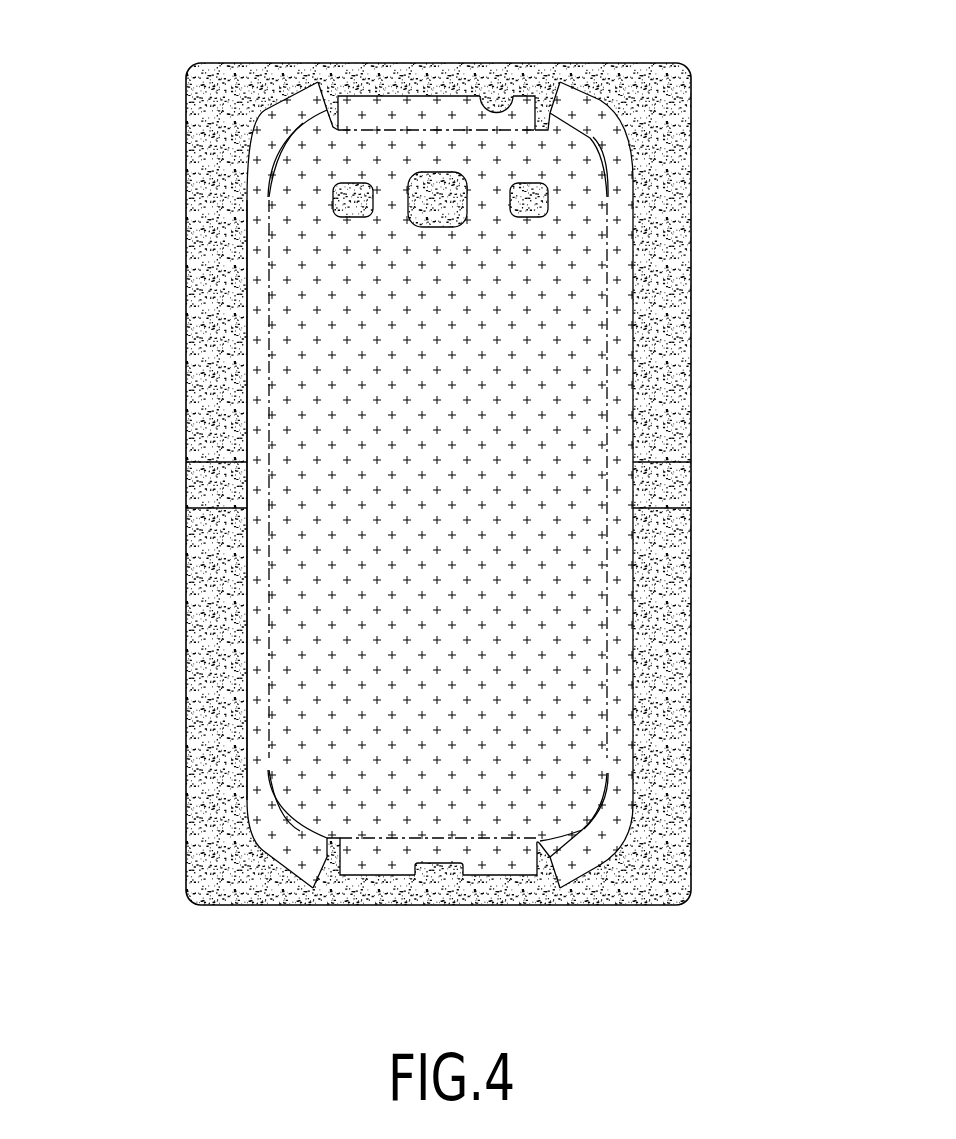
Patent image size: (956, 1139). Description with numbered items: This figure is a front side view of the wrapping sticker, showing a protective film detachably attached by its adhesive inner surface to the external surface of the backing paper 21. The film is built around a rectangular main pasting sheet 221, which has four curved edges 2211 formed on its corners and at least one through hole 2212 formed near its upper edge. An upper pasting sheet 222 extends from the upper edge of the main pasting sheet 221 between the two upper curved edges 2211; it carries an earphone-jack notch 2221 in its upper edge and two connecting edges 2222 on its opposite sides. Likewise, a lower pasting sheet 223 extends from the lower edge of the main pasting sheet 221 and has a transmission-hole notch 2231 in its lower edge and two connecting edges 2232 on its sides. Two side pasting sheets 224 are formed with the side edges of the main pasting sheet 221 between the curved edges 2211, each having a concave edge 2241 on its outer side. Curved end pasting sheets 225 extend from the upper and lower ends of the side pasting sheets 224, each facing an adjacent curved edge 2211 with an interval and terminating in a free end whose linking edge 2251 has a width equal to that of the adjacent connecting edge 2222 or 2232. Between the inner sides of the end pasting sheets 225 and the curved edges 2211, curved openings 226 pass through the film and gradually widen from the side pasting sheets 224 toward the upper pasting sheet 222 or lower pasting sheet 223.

The backing paper 21 is at (672, 655).
The main pasting sheet 221 is at (583, 328).
The curved edges 2211 is at (592, 138).
The through hole 2212 is at (430, 212).
The upper pasting sheet 222 is at (413, 113).
The earphone-jack notch 2221 is at (494, 110).
The connecting edges 2222 is at (333, 100).
The lower pasting sheet 223 is at (370, 858).
The transmission-hole notch 2231 is at (443, 868).
The connecting edges 2232 is at (540, 838).
The side pasting sheets 224 is at (262, 568).
The concave edge 2241 is at (247, 400).
The end pasting sheets 225 is at (263, 130).
The linking edge 2251 is at (323, 83).
The curved openings 226 is at (303, 135).